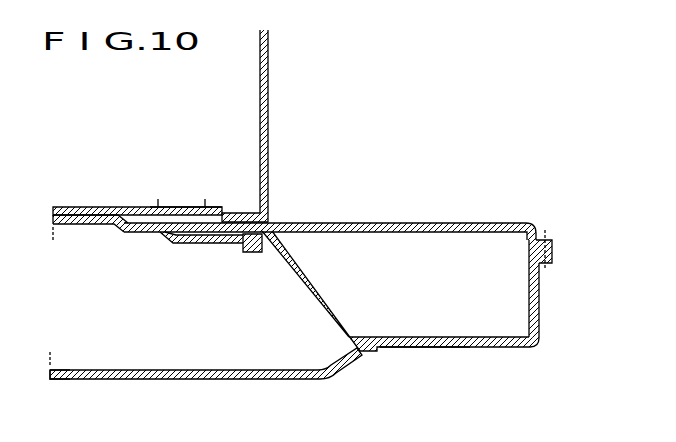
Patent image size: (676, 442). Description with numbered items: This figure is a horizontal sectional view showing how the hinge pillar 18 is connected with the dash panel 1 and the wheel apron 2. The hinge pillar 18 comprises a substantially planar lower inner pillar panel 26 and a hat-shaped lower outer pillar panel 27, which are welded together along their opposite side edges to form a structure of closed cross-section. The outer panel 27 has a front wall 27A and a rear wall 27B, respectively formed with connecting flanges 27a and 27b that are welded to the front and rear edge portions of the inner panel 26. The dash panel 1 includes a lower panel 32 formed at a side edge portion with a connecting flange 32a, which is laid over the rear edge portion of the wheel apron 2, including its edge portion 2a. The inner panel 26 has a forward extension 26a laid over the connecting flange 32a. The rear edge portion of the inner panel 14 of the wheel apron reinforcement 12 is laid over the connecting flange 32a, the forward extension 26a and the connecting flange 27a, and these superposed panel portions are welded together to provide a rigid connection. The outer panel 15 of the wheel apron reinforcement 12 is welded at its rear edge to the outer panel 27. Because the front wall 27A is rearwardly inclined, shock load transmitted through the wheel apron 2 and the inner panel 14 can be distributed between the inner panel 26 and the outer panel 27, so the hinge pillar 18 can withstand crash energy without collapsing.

The dash panel 1 is at (275, 126).
The lower panel 32 is at (268, 103).
The connecting flange 32a is at (234, 212).
The wheel apron 2 is at (137, 185).
The edge portion of roof panel 2a is at (173, 206).
The inner panel 14 is at (80, 226).
The lower inner pillar panel 26 is at (330, 238).
The forward extension 26a is at (210, 244).
The lower outer pillar panel 27 is at (432, 309).
The connecting flange 27a is at (260, 253).
The front wall 27A is at (312, 304).
The rear wall 27B is at (540, 306).
The connecting flange 27b is at (554, 251).
The outer panel 15 is at (182, 387).
The wheel apron reinforcement 12 is at (55, 381).
The hinge pillar 18 is at (422, 349).